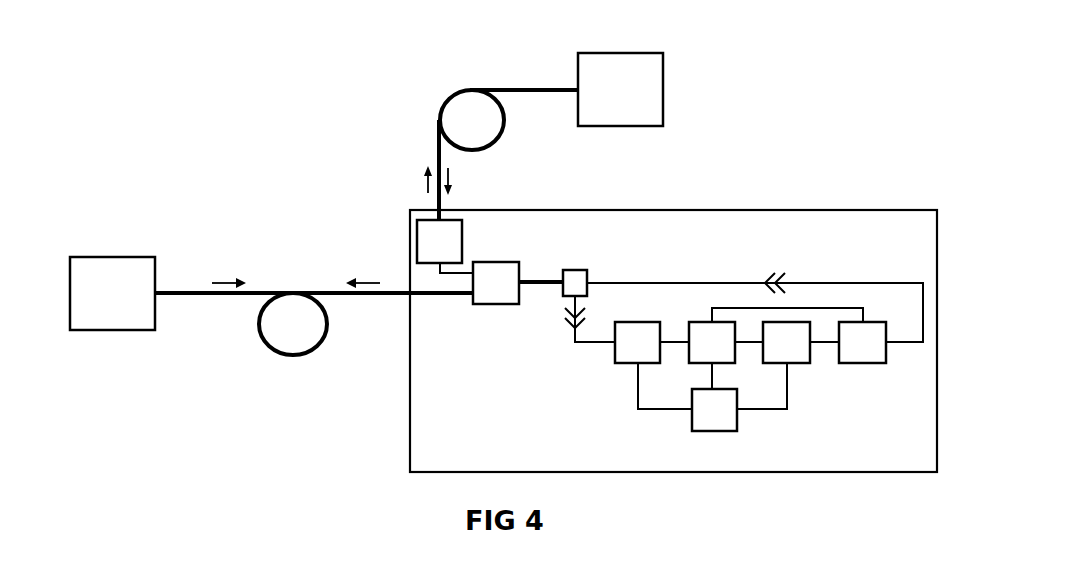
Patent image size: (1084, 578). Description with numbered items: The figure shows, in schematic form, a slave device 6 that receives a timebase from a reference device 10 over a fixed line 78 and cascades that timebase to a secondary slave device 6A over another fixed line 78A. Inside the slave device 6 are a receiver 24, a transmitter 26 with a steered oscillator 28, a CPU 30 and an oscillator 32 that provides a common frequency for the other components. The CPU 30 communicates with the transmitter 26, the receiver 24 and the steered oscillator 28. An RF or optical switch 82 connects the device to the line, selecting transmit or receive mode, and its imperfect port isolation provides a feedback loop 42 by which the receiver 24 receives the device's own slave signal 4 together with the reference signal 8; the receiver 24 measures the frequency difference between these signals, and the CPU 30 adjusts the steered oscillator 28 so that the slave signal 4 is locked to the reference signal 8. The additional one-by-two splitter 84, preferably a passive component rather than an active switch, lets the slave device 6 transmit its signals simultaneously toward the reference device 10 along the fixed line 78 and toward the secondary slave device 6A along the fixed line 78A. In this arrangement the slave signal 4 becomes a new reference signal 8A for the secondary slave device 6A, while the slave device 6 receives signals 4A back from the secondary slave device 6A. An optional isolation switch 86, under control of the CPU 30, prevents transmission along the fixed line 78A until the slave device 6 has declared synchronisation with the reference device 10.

The slave signal 4 is at (362, 282).
The signals from the secondary slave device 4A is at (456, 184).
The slave device 6 is at (896, 210).
The secondary slave device 6A is at (665, 86).
The reference signal 8 is at (225, 282).
The new reference signal 8A is at (422, 181).
The reference device 10 is at (115, 330).
The receiver 24 is at (637, 342).
The transmitter 26 is at (862, 342).
The steered oscillator 28 is at (786, 342).
The CPU 30 is at (712, 342).
The oscillator 32 is at (714, 410).
The feedback loop 42 is at (780, 277).
The fixed line 78 is at (292, 356).
The fixed line 78A is at (440, 110).
The RF or optical switch 82 is at (575, 270).
The 1×2 splitter 84 is at (496, 283).
The isolation switch 86 is at (439, 241).